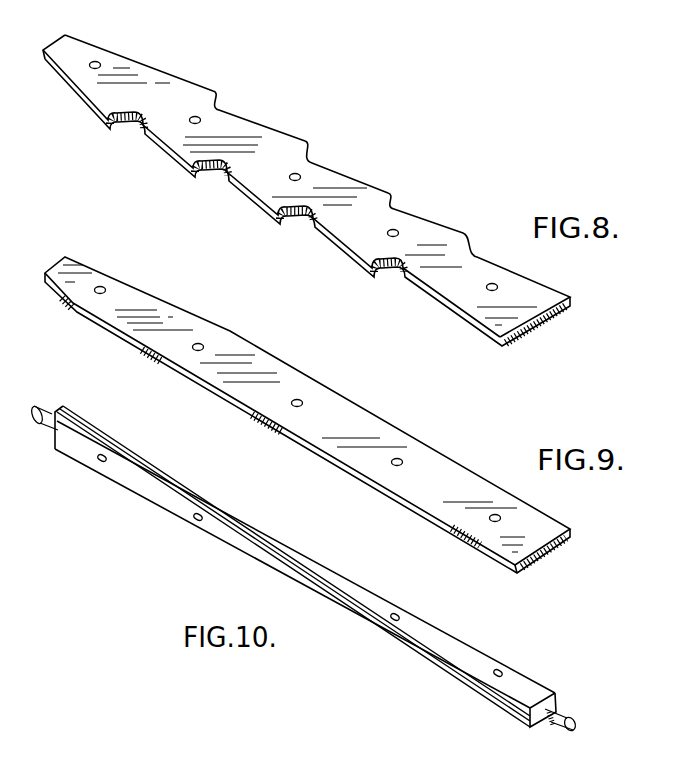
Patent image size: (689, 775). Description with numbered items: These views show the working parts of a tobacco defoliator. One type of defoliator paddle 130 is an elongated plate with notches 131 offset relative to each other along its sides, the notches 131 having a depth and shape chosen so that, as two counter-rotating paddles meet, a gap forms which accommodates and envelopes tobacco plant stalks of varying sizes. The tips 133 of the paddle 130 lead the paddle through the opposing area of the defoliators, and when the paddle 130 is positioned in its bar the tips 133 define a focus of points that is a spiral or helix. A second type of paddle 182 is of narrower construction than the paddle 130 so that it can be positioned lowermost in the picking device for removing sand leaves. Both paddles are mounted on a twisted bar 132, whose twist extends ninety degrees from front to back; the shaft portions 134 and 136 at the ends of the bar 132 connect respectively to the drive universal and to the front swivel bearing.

In FIG. 8, the defoliator paddle 130 is at (298, 147).
In FIG. 8, the notches 131 is at (218, 168).
In FIG. 8, the tips 133 is at (115, 127).
In FIG. 9, the paddle 182 is at (353, 425).
In FIG. 10, the twisted bar 132 is at (525, 692).
In FIG. 10, the shaft portion 134 is at (563, 713).
In FIG. 10, the shaft portion 136 is at (45, 422).